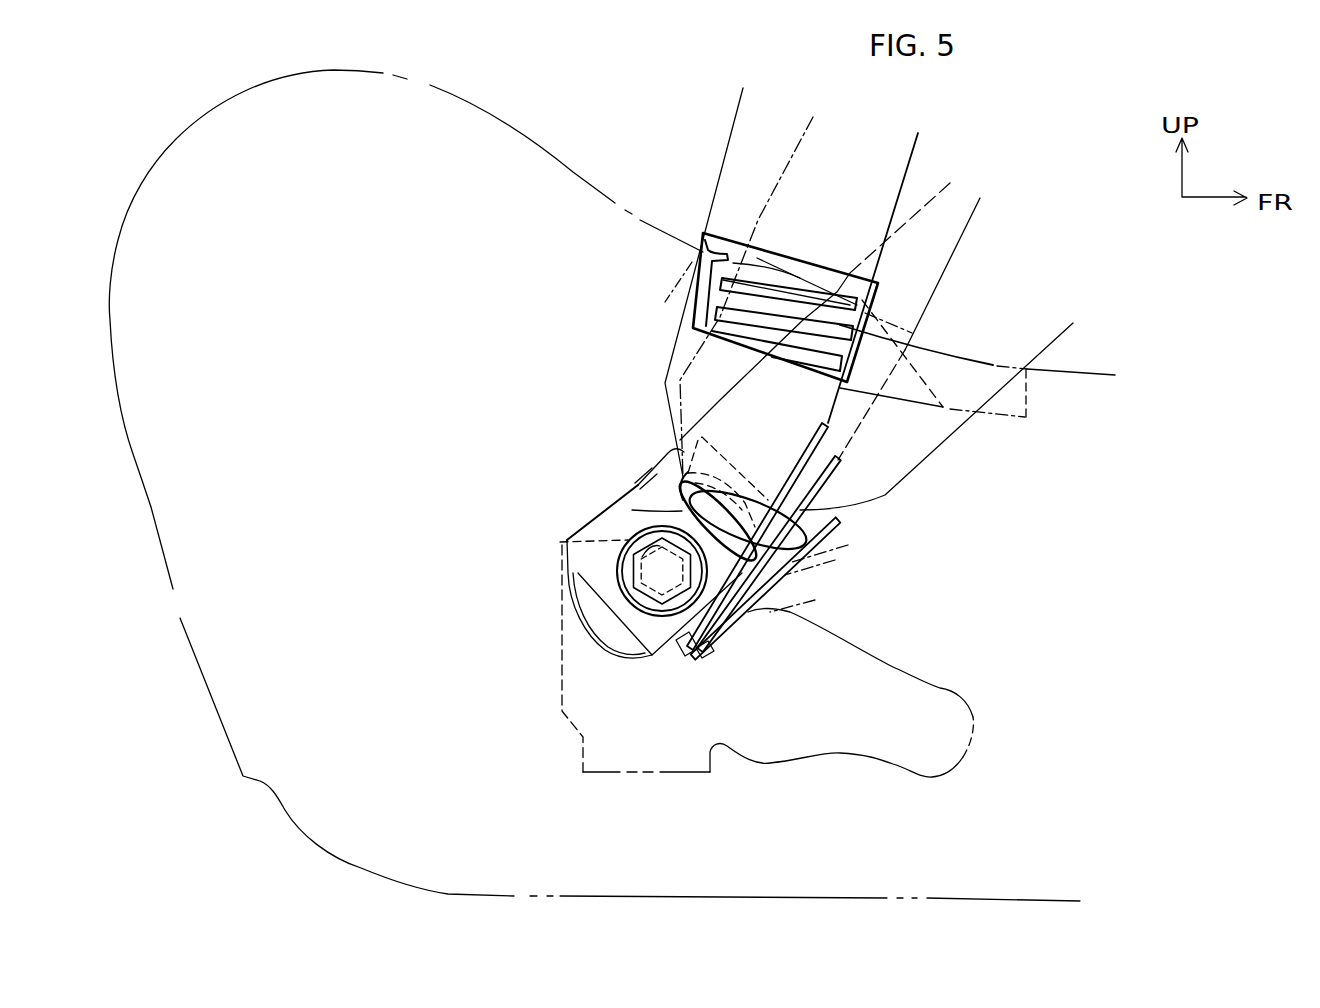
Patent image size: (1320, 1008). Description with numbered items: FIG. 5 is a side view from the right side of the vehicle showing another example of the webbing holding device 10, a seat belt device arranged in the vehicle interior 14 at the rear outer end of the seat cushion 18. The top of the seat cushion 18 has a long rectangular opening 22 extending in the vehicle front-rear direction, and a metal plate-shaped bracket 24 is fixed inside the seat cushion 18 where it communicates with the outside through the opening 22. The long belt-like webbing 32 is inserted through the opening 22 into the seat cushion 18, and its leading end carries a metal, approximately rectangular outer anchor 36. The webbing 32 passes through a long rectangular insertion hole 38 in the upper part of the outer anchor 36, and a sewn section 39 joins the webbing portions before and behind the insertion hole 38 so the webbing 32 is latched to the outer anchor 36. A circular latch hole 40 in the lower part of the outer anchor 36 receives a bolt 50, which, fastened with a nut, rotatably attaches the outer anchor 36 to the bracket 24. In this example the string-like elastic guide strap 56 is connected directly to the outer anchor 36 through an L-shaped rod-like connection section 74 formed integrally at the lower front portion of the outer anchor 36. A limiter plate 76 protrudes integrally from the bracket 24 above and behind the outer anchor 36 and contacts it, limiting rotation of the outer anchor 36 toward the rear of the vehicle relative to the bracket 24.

The webbing holding device 10 is at (656, 144).
The vehicle interior 14 is at (1042, 118).
The seat cushion 18 is at (515, 131).
The opening 22 is at (957, 358).
The bracket 24 is at (893, 667).
The webbing 32 is at (938, 190).
The outer anchor 36 is at (635, 481).
The insertion hole 38 is at (632, 510).
The sewn section 39 is at (722, 234).
The latch hole 40 is at (566, 547).
The bolt 50 is at (632, 572).
The guide strap 56 is at (848, 545).
The connection section 74 is at (700, 656).
The limiter plate 76 is at (650, 452).